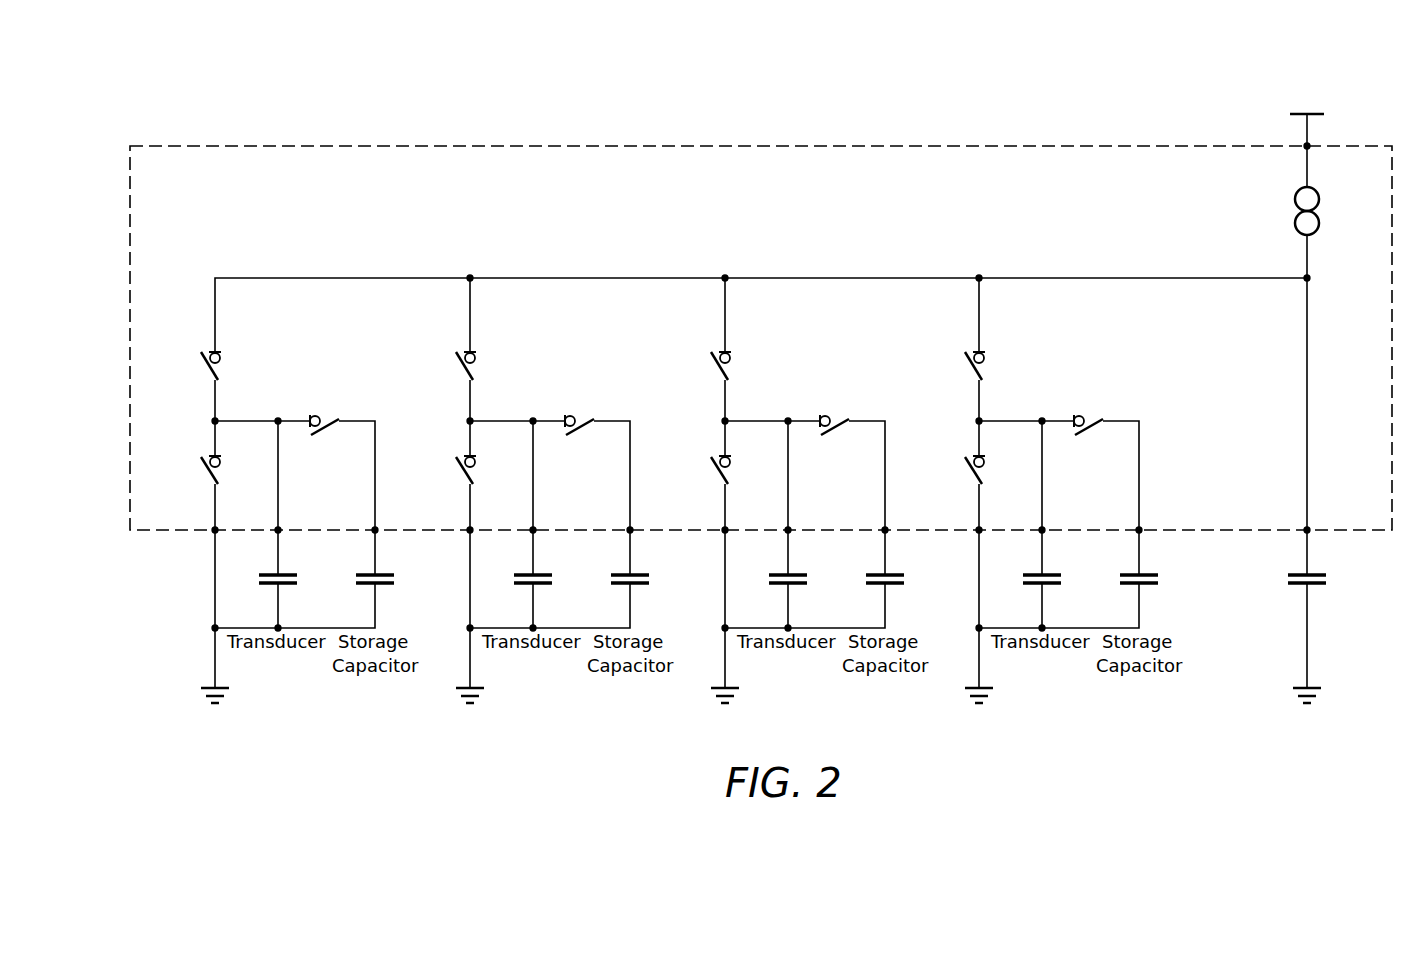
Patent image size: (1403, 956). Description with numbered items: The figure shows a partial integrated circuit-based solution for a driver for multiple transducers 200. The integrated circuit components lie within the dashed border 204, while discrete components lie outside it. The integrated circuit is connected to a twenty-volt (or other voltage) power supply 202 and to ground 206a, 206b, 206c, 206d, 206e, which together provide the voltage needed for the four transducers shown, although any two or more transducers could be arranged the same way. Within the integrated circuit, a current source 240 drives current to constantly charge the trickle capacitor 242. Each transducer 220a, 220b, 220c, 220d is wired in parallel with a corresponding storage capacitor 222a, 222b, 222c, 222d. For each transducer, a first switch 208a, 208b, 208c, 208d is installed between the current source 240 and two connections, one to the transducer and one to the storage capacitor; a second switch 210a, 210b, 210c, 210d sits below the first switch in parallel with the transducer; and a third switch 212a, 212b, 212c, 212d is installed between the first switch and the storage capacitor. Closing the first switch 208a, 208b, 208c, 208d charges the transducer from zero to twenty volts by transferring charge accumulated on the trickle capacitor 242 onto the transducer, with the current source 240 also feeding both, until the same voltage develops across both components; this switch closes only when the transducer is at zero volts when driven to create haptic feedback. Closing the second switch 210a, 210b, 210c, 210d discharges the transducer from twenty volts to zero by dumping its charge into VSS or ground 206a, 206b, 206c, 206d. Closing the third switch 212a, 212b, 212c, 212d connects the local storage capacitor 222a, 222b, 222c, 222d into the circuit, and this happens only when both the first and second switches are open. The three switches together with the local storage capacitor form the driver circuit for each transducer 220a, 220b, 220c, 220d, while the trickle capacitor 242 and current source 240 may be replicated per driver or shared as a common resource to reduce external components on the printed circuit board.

The driver for multiple transducers 200 is at (343, 122).
The power supply 202 is at (1326, 99).
The dashed border 204 is at (186, 146).
The ground 206a is at (218, 690).
The ground 206b is at (506, 710).
The ground 206c is at (760, 710).
The ground 206d is at (1015, 710).
The ground 206e is at (1310, 690).
The first switch S1 208a is at (205, 370).
The first switch S1 208b is at (448, 381).
The first switch S1 208c is at (703, 381).
The first switch S1 208d is at (957, 381).
The second switch S2 210a is at (205, 475).
The second switch S2 210b is at (448, 485).
The second switch S2 210c is at (703, 485).
The second switch S2 210d is at (957, 485).
The third switch S3 212a is at (326, 432).
The third switch S3 212b is at (582, 442).
The third switch S3 212c is at (836, 442).
The third switch S3 212d is at (1091, 442).
The transducer C1 220a is at (283, 586).
The transducer C3 220b is at (551, 596).
The transducer C5 220c is at (805, 596).
The transducer C7 220d is at (1060, 596).
The storage capacitor C2 222a is at (380, 586).
The storage capacitor C4 222b is at (647, 596).
The storage capacitor C6 222c is at (901, 596).
The storage capacitor C8 222d is at (1156, 596).
The current source G1 240 is at (1295, 213).
The trickle capacitor C9 242 is at (1328, 584).